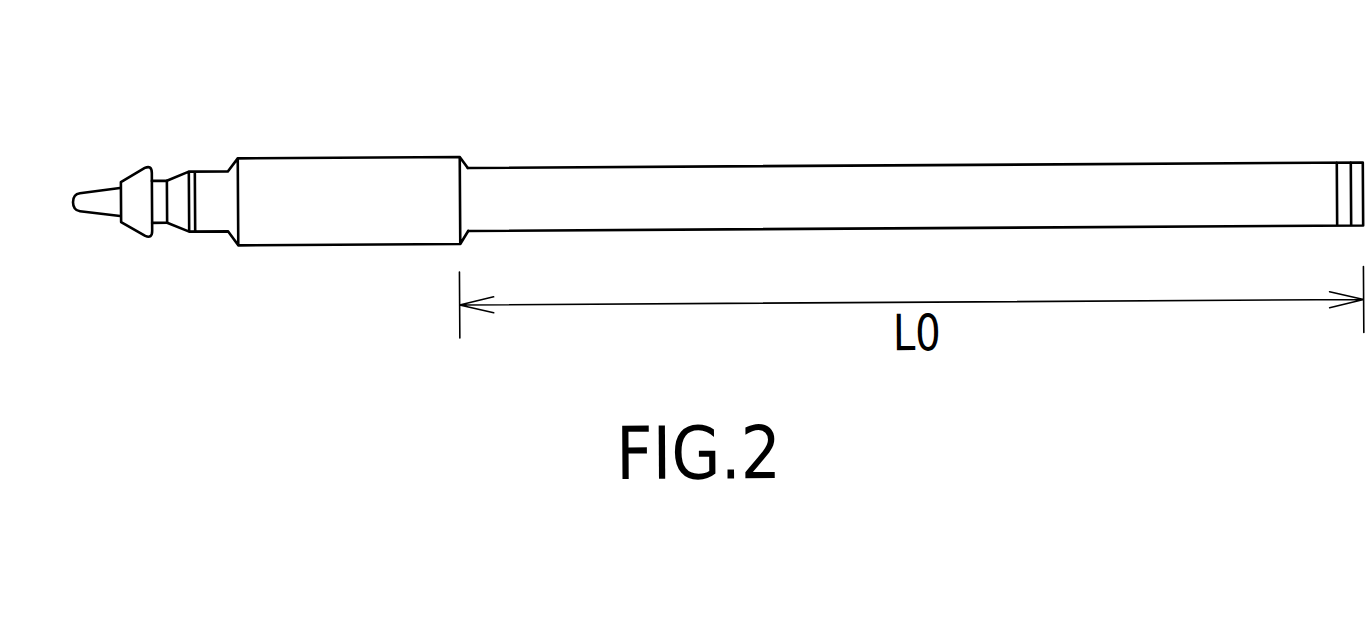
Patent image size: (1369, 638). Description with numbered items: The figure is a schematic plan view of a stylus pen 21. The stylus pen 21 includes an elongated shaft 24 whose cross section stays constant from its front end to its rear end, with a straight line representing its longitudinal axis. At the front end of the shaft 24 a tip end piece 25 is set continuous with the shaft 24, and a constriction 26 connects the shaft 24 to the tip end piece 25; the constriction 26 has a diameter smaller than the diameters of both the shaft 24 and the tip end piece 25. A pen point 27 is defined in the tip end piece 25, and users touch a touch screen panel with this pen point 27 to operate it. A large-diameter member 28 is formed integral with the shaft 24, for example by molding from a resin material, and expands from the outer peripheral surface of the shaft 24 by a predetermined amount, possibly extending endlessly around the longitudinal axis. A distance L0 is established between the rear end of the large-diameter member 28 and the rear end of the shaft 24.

The stylus pen 21 is at (1092, 86).
The shaft 24 is at (694, 167).
The tip end piece 25 is at (131, 170).
The constriction 26 is at (162, 177).
The pen point 27 is at (83, 210).
The large-diameter member 28 is at (420, 156).